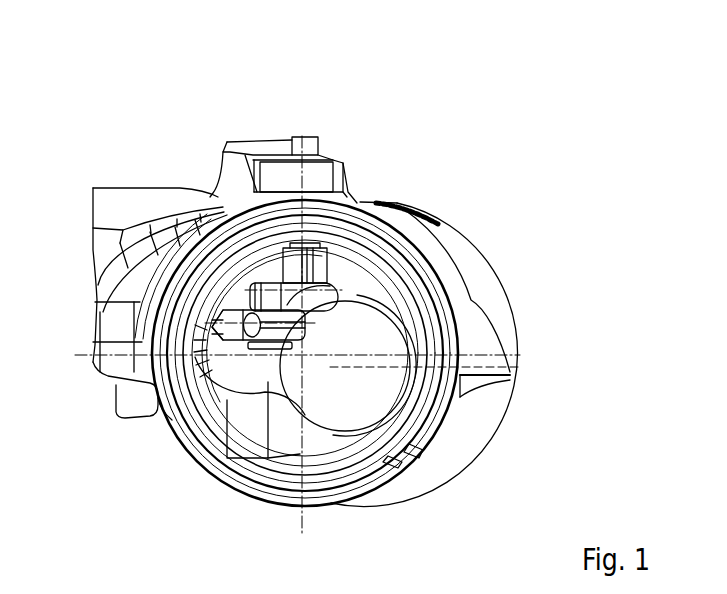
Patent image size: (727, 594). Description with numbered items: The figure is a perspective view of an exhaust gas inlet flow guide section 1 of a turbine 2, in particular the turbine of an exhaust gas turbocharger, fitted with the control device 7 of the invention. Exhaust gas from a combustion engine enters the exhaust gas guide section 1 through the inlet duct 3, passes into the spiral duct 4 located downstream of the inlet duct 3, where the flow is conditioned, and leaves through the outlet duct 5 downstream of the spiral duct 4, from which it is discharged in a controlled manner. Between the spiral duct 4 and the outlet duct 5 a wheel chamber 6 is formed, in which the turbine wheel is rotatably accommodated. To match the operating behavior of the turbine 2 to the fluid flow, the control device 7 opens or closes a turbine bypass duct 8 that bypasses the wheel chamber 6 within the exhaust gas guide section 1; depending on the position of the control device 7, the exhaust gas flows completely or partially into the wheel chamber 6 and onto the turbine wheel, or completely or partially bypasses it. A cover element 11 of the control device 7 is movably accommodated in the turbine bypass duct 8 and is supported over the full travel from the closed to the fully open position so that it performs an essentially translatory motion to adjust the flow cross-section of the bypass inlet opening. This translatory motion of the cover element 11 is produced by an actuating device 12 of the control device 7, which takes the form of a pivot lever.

The exhaust gas inlet flow guide section 1 is at (491, 298).
The turbine 2 is at (549, 163).
The inlet duct 3 is at (157, 198).
The spiral duct 4 is at (490, 404).
The outlet duct 5 is at (248, 437).
The wheel chamber 6 is at (365, 218).
The control device 7 is at (256, 126).
The turbine bypass duct 8 is at (86, 308).
The cover element 11 is at (238, 368).
The actuating device 12 is at (340, 272).